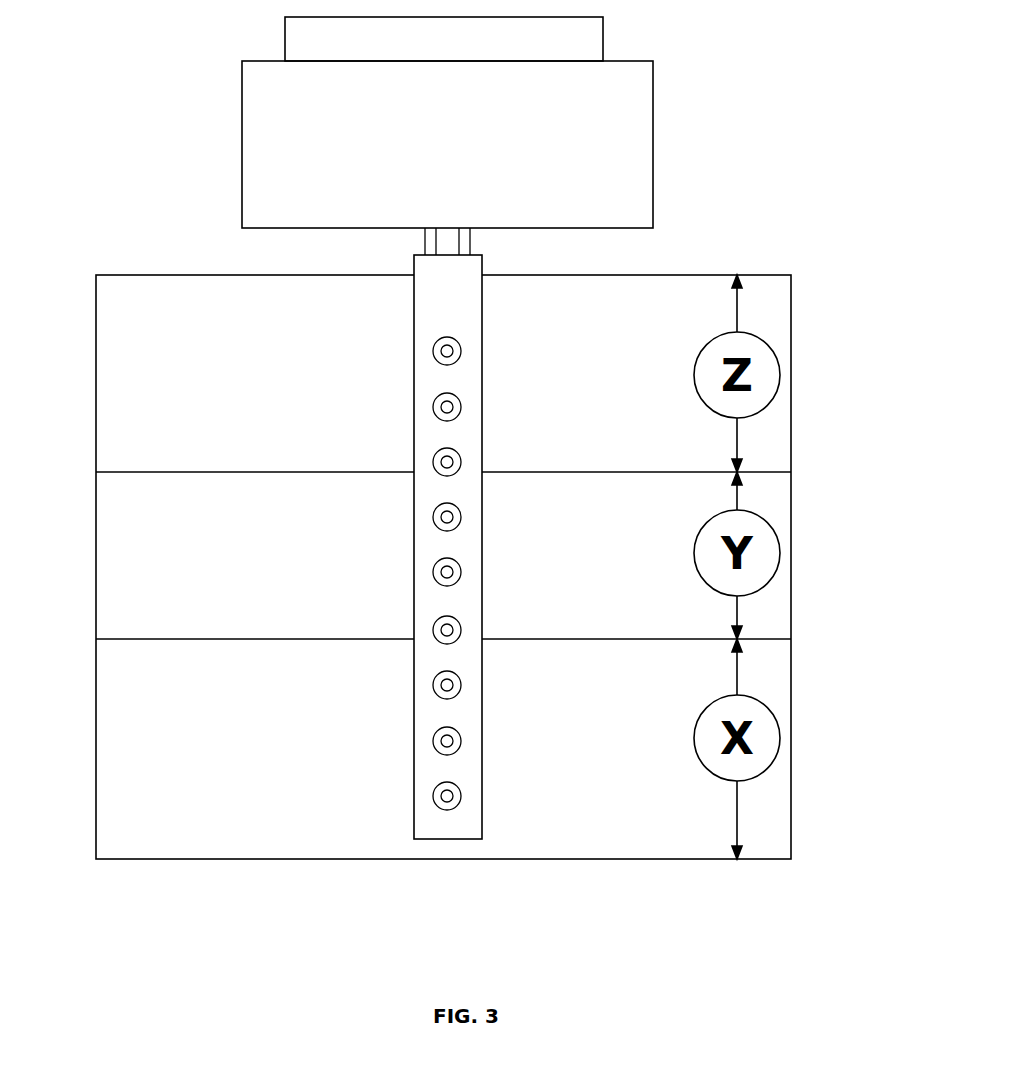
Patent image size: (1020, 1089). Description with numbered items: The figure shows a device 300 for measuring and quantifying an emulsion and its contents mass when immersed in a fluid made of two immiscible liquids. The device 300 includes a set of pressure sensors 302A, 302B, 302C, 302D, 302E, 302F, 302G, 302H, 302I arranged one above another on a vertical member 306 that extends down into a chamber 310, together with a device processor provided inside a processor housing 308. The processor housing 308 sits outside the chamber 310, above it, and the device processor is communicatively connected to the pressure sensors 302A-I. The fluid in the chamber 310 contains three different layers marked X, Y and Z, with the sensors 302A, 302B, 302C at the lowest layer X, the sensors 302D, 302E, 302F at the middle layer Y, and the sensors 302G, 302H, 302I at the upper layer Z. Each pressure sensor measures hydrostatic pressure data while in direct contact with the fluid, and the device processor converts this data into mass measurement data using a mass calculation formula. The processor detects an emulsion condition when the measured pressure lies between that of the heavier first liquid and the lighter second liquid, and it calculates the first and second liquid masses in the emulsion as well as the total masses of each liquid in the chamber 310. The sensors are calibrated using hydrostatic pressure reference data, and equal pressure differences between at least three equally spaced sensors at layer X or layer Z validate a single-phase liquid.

The device 300 is at (640, 966).
The pressure sensor 302A is at (433, 796).
The pressure sensor 302B is at (433, 741).
The pressure sensor 302C is at (433, 685).
The pressure sensor 302D is at (436, 638).
The pressure sensor 302E is at (433, 572).
The pressure sensor 302F is at (433, 517).
The pressure sensor 302G is at (436, 470).
The pressure sensor 302H is at (433, 407).
The pressure sensor 302I is at (433, 351).
The sensor bar 306 is at (482, 345).
The processor housing 308 is at (653, 100).
The chamber 310 is at (97, 770).